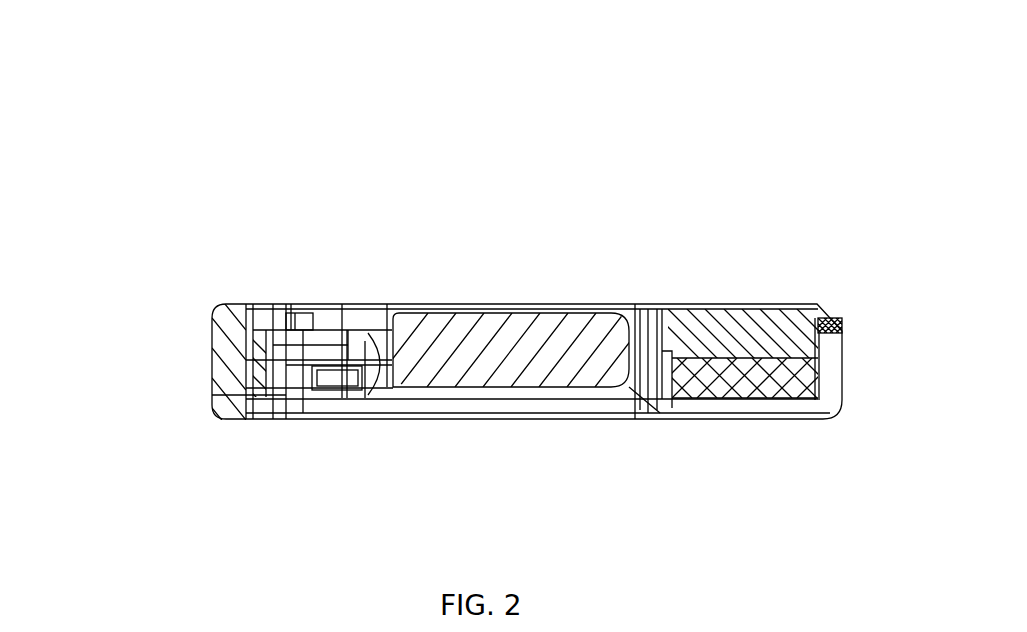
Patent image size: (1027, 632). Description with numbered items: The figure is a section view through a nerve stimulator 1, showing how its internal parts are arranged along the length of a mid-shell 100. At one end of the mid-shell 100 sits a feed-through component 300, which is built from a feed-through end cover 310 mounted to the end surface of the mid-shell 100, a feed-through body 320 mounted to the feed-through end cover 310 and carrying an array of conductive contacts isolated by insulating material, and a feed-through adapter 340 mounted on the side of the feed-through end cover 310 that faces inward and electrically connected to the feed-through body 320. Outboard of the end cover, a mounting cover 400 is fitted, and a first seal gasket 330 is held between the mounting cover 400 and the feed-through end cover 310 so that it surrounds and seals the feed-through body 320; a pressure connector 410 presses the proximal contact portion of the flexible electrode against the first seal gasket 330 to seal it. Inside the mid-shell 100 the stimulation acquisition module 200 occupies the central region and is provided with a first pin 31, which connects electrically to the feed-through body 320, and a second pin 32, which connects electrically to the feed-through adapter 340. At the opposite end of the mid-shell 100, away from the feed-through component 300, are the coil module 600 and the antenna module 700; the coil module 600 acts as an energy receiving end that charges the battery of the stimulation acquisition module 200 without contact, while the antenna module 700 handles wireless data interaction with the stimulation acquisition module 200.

The nerve stimulator 1 is at (518, 130).
The mid-shell 100 is at (493, 305).
The stimulation acquisition module 200 is at (392, 305).
The feed-through component 300 is at (230, 60).
The feed-through end cover 310 is at (273, 305).
The feed-through body 320 is at (224, 305).
The first seal gasket 330 is at (253, 305).
The feed-through adapter 340 is at (291, 304).
The first pin 31 is at (302, 421).
The second pin 32 is at (340, 304).
The mounting cover 400 is at (222, 366).
The pressure connector 410 is at (233, 398).
The coil module 600 is at (764, 418).
The antenna module 700 is at (828, 318).